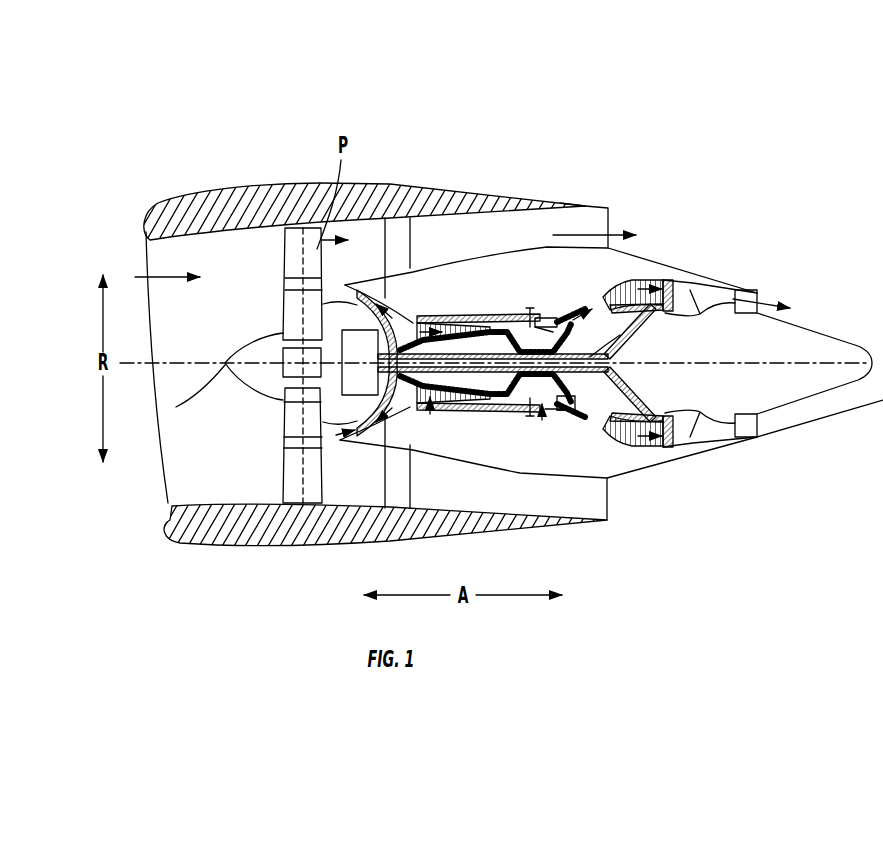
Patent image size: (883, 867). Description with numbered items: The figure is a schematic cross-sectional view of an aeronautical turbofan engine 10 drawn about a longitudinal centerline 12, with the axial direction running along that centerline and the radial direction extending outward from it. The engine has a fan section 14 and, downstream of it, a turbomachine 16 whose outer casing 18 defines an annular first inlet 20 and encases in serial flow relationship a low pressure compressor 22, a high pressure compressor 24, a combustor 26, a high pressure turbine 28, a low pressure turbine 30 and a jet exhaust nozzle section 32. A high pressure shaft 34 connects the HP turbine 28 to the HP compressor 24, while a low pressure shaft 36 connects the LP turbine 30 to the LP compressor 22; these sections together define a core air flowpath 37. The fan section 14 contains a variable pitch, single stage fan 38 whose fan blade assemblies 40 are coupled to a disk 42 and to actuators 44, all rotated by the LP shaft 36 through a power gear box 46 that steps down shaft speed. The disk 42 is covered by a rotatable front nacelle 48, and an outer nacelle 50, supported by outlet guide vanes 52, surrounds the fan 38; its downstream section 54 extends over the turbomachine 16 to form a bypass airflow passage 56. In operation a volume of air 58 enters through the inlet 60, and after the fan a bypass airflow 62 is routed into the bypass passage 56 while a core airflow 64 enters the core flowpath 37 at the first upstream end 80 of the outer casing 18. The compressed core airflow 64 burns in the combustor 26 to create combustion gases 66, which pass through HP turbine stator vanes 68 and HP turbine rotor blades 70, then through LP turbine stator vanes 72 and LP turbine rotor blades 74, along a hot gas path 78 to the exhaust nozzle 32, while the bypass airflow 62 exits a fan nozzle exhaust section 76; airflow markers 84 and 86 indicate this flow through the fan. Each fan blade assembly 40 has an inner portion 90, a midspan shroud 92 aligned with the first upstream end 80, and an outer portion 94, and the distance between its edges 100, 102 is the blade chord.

The turbofan engine 10 is at (702, 196).
The longitudinal centerline 12 is at (718, 362).
The fan section 14 is at (311, 162).
The turbomachine 16 is at (478, 292).
The outer casing 18 is at (518, 475).
The first inlet 20 is at (342, 437).
The low pressure compressor 22 is at (413, 420).
The high pressure compressor 24 is at (430, 412).
The combustor 26 is at (542, 418).
The high pressure turbine 28 is at (600, 406).
The low pressure turbine 30 is at (663, 447).
The jet exhaust nozzle section 32 is at (703, 438).
The high pressure shaft 34 is at (527, 315).
The low pressure shaft 36 is at (615, 340).
The core air flowpath 37 is at (592, 432).
The fan 38 is at (262, 395).
The fan blade assemblies 40 is at (249, 275).
The disk 42 is at (292, 332).
The actuators 44 is at (283, 352).
The power gear box 46 is at (400, 320).
The front nacelle 48 is at (176, 407).
The outer nacelle 50 is at (280, 544).
The outlet guide vanes 52 is at (412, 230).
The downstream section 54 is at (568, 203).
The bypass airflow passage 56 is at (505, 244).
The volume of air 58 is at (170, 276).
The inlet 60 is at (165, 503).
The bypass airflow 62 is at (277, 247).
The core airflow 64 is at (325, 296).
The combustion gases 66 is at (582, 314).
The HP turbine stator vanes 68 is at (573, 417).
The HP turbine rotor blades 70 is at (600, 393).
The LP turbine stator vanes 72 is at (614, 445).
The LP turbine rotor blades 74 is at (625, 447).
The fan nozzle exhaust section 76 is at (603, 227).
The hot gas path 78 is at (601, 302).
The first upstream end 80 is at (390, 265).
The fan flow streamline 84 is at (420, 257).
The inlet flow 86 is at (250, 303).
The inner portion 90 is at (310, 312).
The midspan shroud 92 is at (313, 278).
The outer portion 94 is at (288, 260).
The edge 100 is at (282, 502).
The edge 102 is at (322, 503).